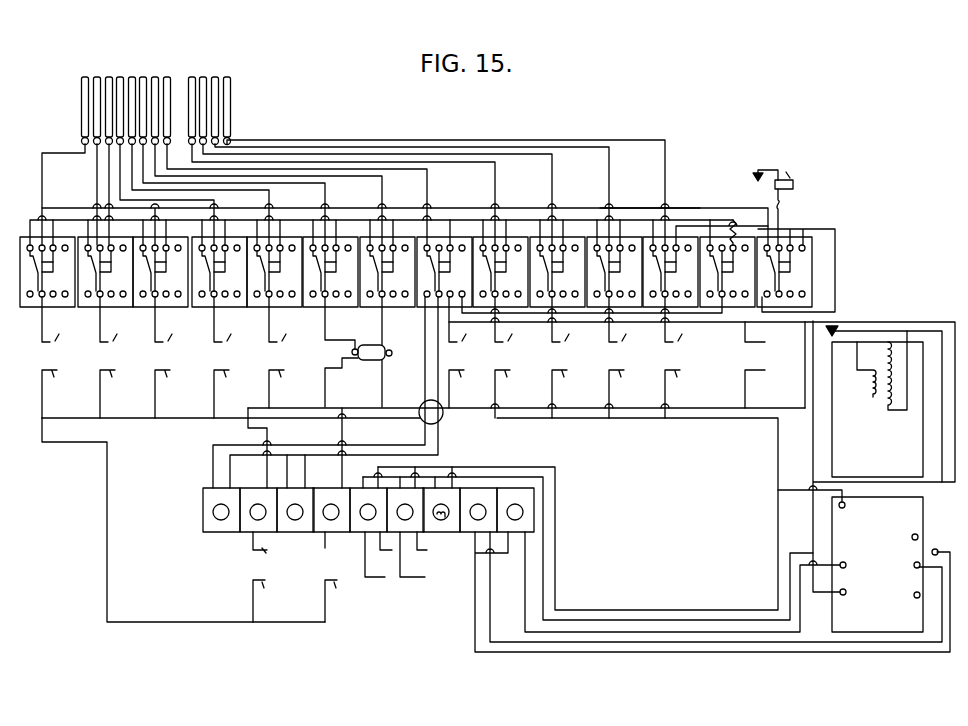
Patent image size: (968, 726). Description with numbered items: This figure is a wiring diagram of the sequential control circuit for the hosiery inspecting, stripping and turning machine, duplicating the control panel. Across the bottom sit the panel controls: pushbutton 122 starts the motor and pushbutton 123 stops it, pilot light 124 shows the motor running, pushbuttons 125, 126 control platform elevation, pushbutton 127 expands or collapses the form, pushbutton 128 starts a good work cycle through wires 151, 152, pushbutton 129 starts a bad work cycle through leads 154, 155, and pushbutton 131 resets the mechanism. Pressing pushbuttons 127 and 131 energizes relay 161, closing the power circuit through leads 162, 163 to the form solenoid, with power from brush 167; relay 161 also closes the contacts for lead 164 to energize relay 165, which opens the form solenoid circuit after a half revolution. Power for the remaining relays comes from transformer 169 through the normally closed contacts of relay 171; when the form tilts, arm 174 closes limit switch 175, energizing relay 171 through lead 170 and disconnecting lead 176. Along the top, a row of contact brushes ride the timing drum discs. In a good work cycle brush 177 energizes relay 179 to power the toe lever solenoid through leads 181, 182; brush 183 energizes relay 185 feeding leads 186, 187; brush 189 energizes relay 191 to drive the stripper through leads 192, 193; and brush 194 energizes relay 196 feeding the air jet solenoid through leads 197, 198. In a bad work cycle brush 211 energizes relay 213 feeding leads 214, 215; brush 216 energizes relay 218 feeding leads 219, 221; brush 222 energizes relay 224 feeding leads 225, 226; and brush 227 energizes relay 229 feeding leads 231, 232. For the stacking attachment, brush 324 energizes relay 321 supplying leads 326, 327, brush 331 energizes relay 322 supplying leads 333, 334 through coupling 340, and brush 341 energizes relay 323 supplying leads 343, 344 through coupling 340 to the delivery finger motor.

The contact brush 177 is at (82, 119).
The contact brush 183 is at (84, 71).
The brush 189 is at (97, 76).
The brush 324 is at (120, 76).
The contact brush 194 is at (131, 76).
The contact brush 331 is at (143, 76).
The contact brush 341 is at (155, 76).
The brush 167 is at (167, 76).
The brush 211 is at (192, 76).
The brush 216 is at (203, 75).
The brush 222 is at (215, 76).
The brush 227 is at (229, 113).
The lead 176 is at (693, 207).
The limit switch 175 is at (791, 176).
The arm 174 is at (800, 181).
The lead 170 is at (783, 197).
The relay 179 is at (64, 293).
The relay 185 is at (122, 293).
The relay 191 is at (177, 293).
The relay 321 is at (236, 293).
The relay 196 is at (291, 293).
The relay 322 is at (347, 293).
The relay 323 is at (404, 293).
The relay 161 is at (458, 247).
The relay 213 is at (517, 293).
The relay 218 is at (574, 293).
The relay 224 is at (631, 293).
The relay 229 is at (687, 293).
The relay 165 is at (746, 293).
The relay 171 is at (806, 293).
The lead 181 is at (58, 319).
The lead 186 is at (116, 319).
The lead 192 is at (171, 319).
The lead 326 is at (230, 319).
The lead 197 is at (285, 319).
The lead 162 is at (465, 319).
The lead 214 is at (511, 329).
The lead 219 is at (568, 328).
The lead 225 is at (624, 328).
The lead 231 is at (685, 328).
The lead 182 is at (58, 394).
The lead 187 is at (115, 394).
The lead 193 is at (170, 394).
The lead 327 is at (230, 394).
The lead 198 is at (285, 389).
The lead 163 is at (460, 389).
The lead 215 is at (511, 394).
The lead 221 is at (569, 394).
The lead 226 is at (624, 394).
The lead 232 is at (685, 394).
The lead 164 is at (525, 314).
The coupling 340 is at (368, 338).
The lead 333 is at (340, 323).
The lead 343 is at (396, 321).
The lead 334 is at (341, 382).
The lead 344 is at (361, 383).
The pushbutton 127 is at (221, 510).
The pushbutton 128 is at (258, 510).
The pushbutton 131 is at (295, 510).
The pushbutton 129 is at (331, 510).
The pushbutton 126 is at (368, 510).
The pushbutton 125 is at (405, 510).
The pilot light 124 is at (441, 510).
The pushbutton 122 is at (478, 510).
The pushbutton 123 is at (515, 510).
The wire 151 is at (274, 550).
The wire 152 is at (275, 601).
The lead 154 is at (330, 551).
The lead 155 is at (341, 601).
The transformer 169 is at (870, 417).